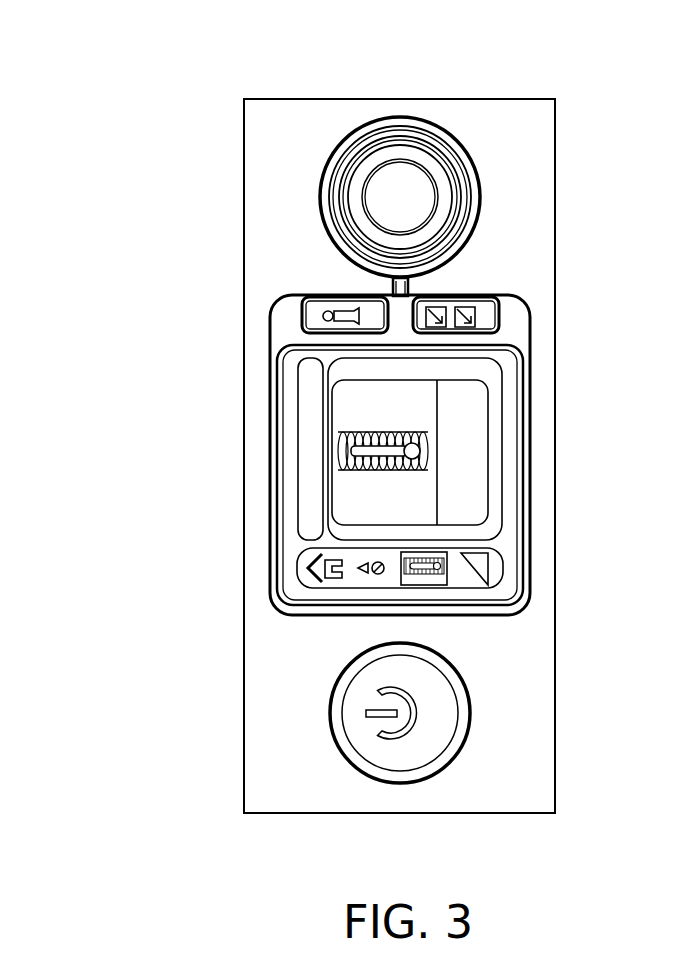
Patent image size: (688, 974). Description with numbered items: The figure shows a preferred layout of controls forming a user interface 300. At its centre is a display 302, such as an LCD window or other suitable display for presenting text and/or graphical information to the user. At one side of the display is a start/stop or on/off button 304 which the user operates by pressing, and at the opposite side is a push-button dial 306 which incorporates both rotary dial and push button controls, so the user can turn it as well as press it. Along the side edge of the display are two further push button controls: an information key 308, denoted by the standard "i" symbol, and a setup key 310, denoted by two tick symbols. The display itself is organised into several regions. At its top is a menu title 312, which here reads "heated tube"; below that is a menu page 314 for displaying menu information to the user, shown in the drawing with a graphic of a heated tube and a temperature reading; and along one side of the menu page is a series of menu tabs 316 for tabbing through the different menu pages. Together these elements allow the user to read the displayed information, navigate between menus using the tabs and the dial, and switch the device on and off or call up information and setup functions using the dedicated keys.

The user interface 300 is at (378, 88).
The display 302 is at (279, 601).
The start/stop button 304 is at (398, 725).
The push-button dial 306 is at (372, 190).
The information key 308 is at (318, 313).
The setup key 310 is at (430, 305).
The menu title 312 is at (300, 499).
The menu page 314 is at (383, 416).
The menu tabs 316 is at (303, 568).